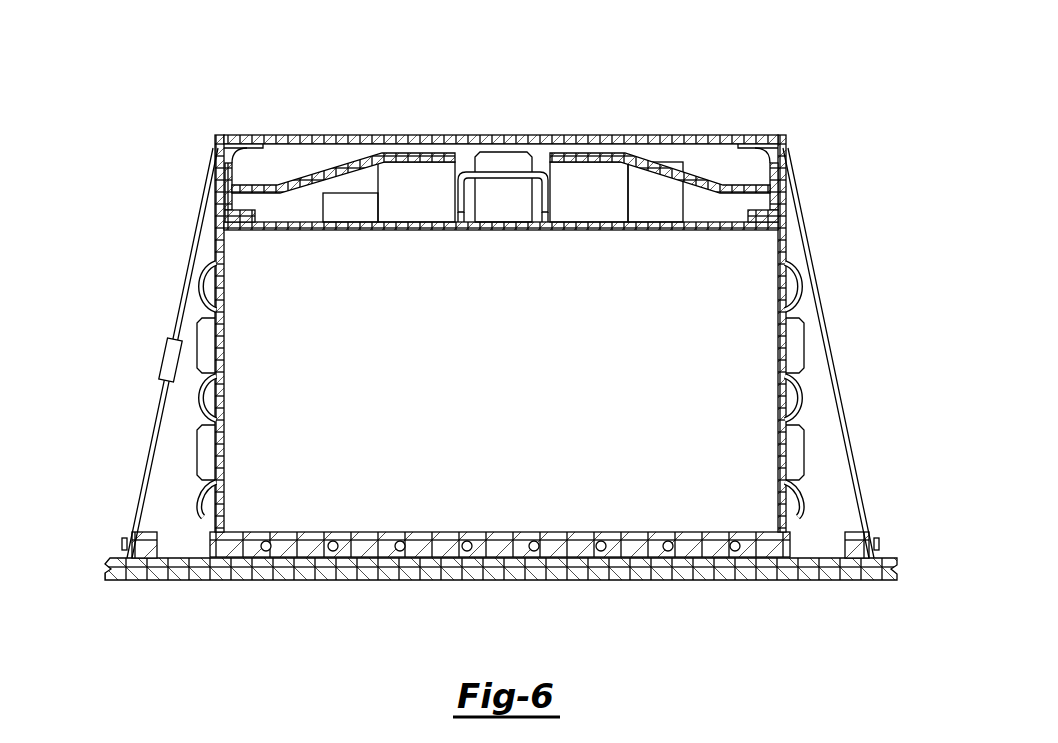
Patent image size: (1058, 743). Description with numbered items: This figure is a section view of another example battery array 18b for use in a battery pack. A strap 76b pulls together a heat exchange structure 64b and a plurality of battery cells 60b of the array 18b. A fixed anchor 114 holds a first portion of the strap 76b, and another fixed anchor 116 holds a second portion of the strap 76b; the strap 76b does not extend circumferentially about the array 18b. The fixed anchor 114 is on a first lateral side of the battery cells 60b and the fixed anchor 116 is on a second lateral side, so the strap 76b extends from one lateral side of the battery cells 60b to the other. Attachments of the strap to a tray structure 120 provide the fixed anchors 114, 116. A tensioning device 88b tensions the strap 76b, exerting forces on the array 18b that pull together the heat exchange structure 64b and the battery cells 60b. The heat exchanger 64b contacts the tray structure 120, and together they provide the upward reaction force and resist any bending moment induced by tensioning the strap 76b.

The array 18b is at (852, 133).
The battery cells 60b is at (512, 350).
The heat exchange structure 64b is at (688, 560).
The strap 76b is at (828, 323).
The tensioning device 88b is at (162, 358).
The fixed anchor 114 is at (113, 545).
The fixed anchor 116 is at (889, 546).
The tray structure 120 is at (157, 546).